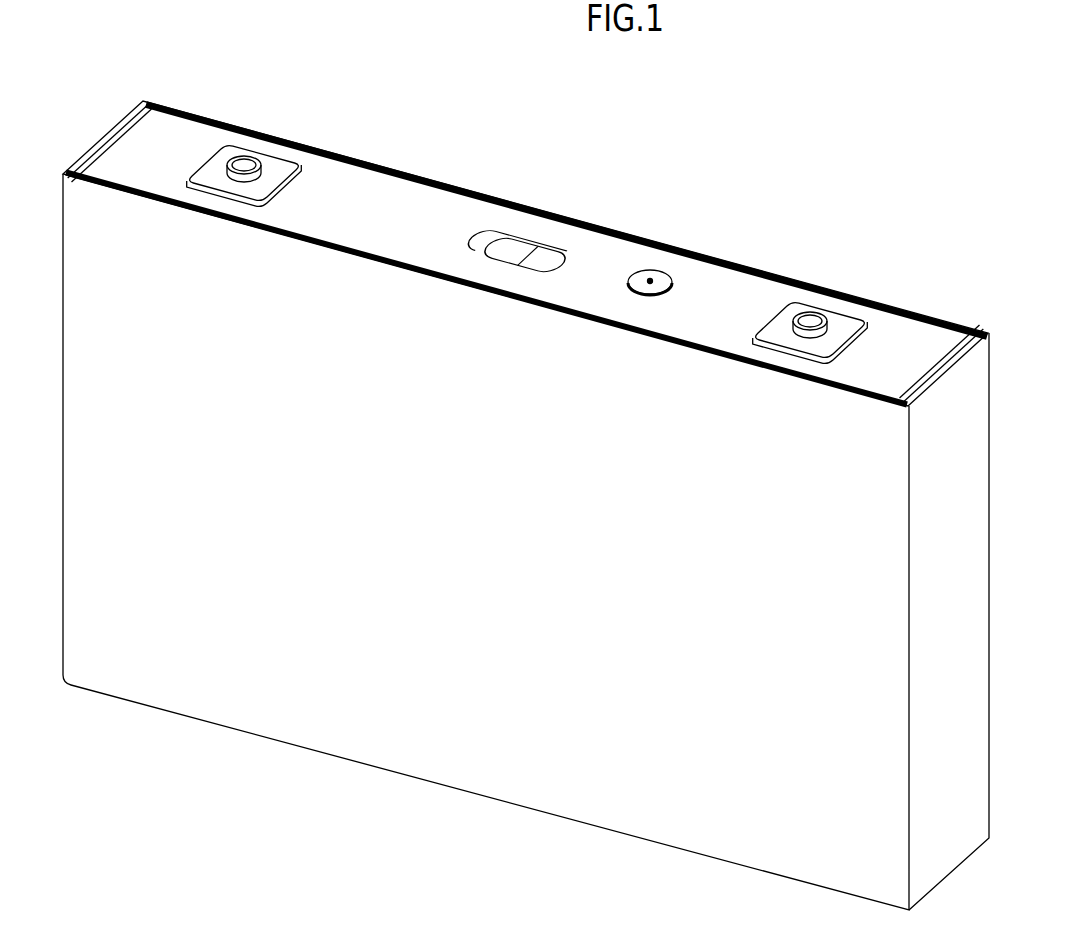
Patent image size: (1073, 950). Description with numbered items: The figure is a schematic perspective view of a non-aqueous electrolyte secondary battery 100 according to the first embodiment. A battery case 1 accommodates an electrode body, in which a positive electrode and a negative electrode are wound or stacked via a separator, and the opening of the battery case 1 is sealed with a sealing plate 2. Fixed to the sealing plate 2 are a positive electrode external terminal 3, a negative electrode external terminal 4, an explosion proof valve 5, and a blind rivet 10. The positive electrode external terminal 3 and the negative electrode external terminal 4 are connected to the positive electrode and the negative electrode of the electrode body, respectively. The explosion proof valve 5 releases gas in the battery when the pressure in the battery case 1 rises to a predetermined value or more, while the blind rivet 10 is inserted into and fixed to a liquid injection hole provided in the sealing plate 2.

The non-aqueous electrolyte secondary battery 100 is at (942, 206).
The battery case 1 is at (975, 563).
The sealing plate 2 is at (396, 210).
The positive electrode external terminal 3 is at (838, 320).
The negative electrode external terminal 4 is at (275, 160).
The explosion proof valve 5 is at (548, 268).
The blind rivet 10 is at (662, 275).